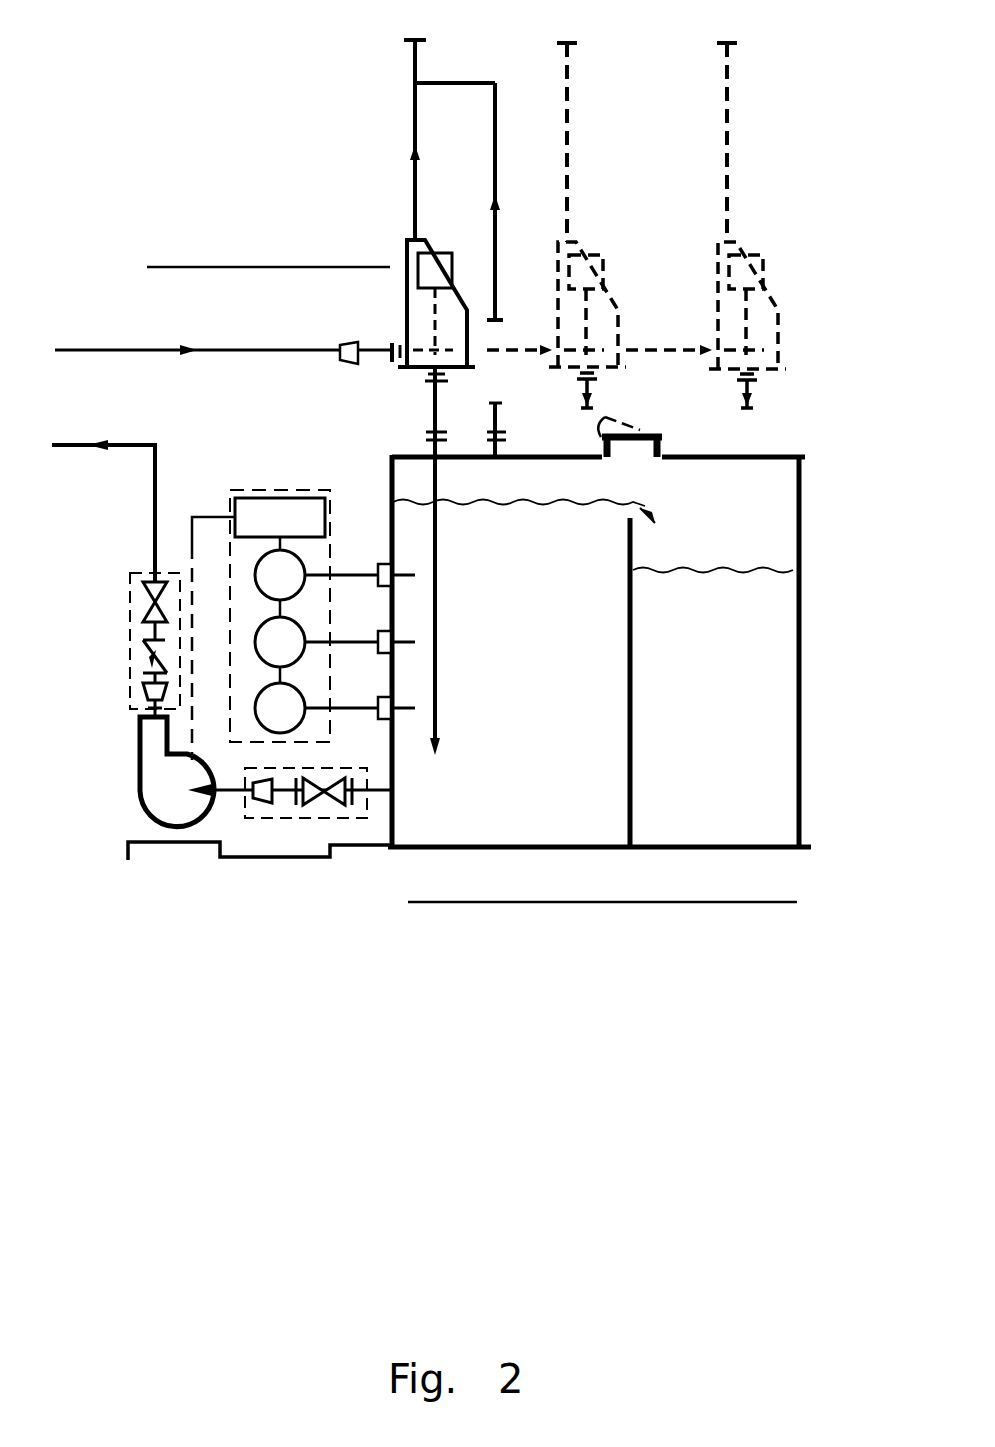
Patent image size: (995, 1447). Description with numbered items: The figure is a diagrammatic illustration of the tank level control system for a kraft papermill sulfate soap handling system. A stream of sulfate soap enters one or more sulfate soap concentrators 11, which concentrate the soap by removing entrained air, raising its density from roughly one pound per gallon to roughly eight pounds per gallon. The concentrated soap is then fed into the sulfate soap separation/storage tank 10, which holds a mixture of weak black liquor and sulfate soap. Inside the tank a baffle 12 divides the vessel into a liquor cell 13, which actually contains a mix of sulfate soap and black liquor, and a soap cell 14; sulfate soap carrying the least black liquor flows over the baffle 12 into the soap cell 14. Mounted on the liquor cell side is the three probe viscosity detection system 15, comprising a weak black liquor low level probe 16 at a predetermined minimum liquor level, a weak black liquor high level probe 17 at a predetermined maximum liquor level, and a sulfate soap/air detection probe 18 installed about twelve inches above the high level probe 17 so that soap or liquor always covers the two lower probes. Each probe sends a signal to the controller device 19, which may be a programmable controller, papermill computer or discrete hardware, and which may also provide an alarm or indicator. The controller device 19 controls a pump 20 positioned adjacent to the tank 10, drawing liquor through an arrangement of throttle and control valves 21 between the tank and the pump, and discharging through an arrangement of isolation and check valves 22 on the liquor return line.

The sulfate soap separation/storage tank 10 is at (800, 658).
The sulfate soap concentrators 11 is at (812, 244).
The baffle 12 is at (630, 745).
The liquor cell 13 is at (505, 588).
The soap cell 14 is at (703, 795).
The three probe viscosity detection system 15 is at (246, 488).
The weak black liquor low level probe 16 is at (256, 697).
The weak black liquor high level probe 17 is at (256, 630).
The sulfate soap/air detection probe 18 is at (256, 563).
The controller device 19 is at (327, 502).
The pump 20 is at (142, 745).
The throttle and control valves 21 is at (300, 818).
The isolation and check valves 22 is at (130, 658).